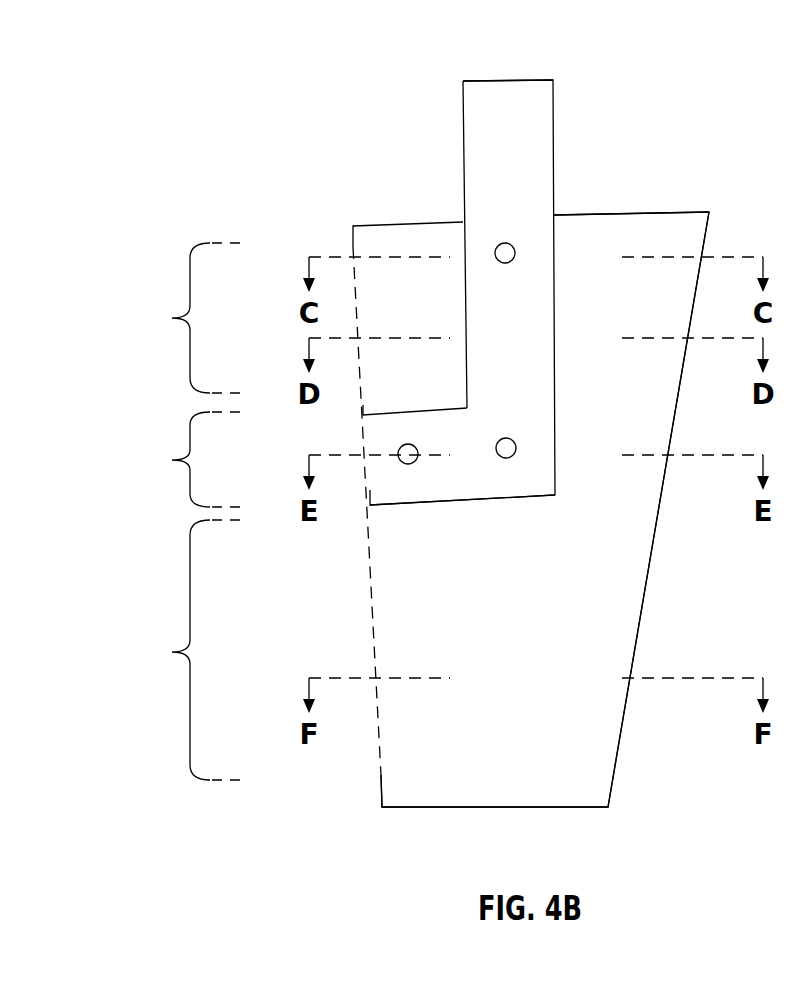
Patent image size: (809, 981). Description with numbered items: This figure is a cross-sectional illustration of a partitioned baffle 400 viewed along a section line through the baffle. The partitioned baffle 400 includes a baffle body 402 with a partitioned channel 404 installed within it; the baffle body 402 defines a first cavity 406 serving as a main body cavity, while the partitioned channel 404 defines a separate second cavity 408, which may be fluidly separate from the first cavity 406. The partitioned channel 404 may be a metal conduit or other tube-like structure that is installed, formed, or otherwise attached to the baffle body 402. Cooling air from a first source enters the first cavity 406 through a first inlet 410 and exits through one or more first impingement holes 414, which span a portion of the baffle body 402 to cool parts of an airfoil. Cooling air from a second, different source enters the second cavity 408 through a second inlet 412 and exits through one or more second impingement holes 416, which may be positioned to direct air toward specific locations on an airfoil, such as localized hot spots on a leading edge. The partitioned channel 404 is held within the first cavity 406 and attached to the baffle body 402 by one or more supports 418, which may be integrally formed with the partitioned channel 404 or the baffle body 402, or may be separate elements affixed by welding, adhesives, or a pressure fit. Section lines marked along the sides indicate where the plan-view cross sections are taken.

The partitioned baffle 400 is at (706, 94).
The baffle body 402 is at (640, 627).
The partitioned channel 404 is at (555, 148).
The first cavity 406 is at (492, 656).
The second cavity 408 is at (492, 380).
The first inlet 410 is at (671, 197).
The second inlet 412 is at (507, 63).
The first impingement holes 414 is at (183, 511).
The second impingement holes 416 is at (183, 459).
The supports 418 is at (506, 243).